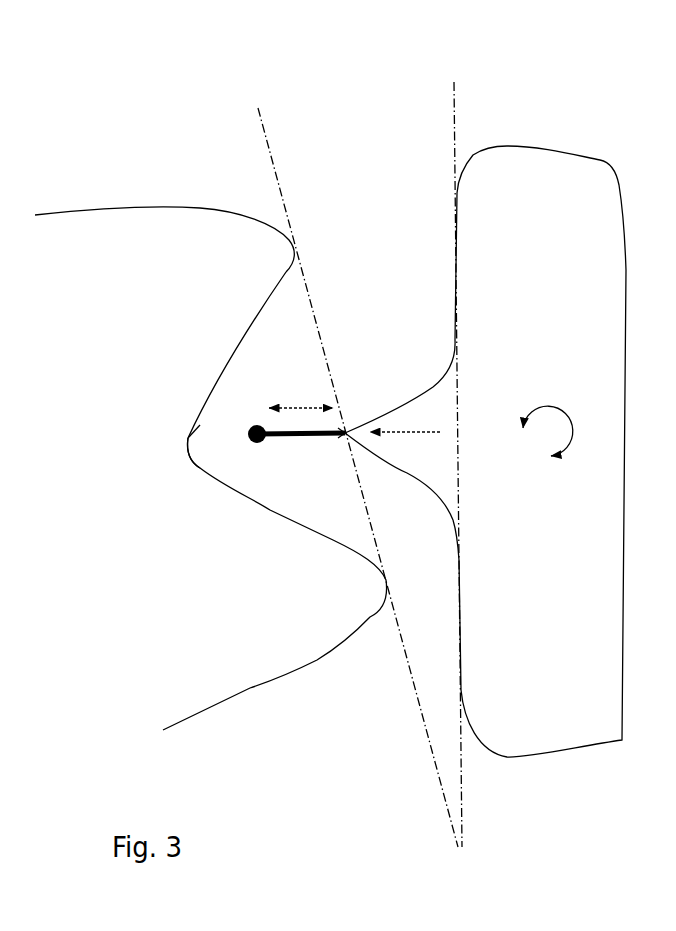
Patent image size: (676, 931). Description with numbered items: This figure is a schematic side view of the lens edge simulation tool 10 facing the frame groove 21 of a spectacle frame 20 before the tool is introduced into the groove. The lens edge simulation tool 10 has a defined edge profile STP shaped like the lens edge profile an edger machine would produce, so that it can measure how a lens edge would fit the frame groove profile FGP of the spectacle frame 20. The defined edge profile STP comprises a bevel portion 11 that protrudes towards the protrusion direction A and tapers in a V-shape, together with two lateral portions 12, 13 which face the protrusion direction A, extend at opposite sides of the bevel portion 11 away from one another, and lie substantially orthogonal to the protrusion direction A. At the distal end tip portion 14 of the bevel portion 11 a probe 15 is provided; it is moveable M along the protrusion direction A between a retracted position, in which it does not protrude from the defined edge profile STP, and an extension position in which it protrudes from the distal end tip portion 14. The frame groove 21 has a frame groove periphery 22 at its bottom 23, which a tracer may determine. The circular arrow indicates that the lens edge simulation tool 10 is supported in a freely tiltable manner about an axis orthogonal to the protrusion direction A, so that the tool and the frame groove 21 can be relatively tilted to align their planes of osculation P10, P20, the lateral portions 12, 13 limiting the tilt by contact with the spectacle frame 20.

The lens edge simulation tool 10 is at (572, 140).
The bevel portion 11 is at (408, 445).
The lateral portion 12 is at (456, 604).
The lateral portion 13 is at (452, 250).
The distal end tip portion 14 is at (341, 440).
The probe 15 is at (250, 433).
The spectacle frame 20 is at (139, 199).
The frame groove 21 is at (260, 372).
The frame groove periphery 22 is at (195, 448).
The bottom 23 is at (190, 437).
The plane of osculation P10 is at (458, 95).
The plane of osculation P20 is at (258, 123).
The frame groove profile FGP is at (278, 310).
The defined edge profile STP is at (402, 396).
The moveable M is at (297, 406).
The protrusion direction A is at (417, 432).